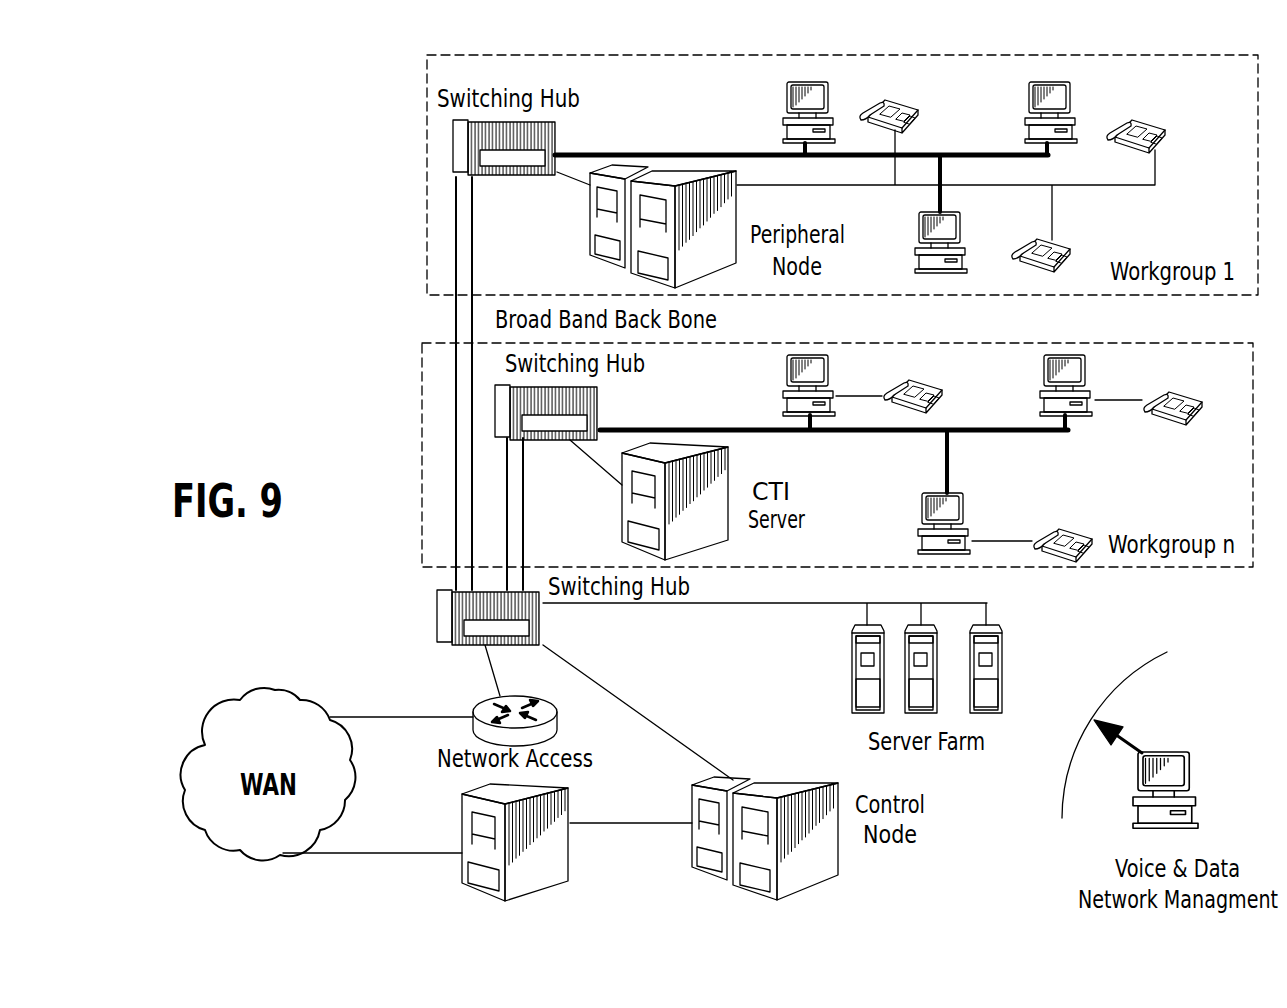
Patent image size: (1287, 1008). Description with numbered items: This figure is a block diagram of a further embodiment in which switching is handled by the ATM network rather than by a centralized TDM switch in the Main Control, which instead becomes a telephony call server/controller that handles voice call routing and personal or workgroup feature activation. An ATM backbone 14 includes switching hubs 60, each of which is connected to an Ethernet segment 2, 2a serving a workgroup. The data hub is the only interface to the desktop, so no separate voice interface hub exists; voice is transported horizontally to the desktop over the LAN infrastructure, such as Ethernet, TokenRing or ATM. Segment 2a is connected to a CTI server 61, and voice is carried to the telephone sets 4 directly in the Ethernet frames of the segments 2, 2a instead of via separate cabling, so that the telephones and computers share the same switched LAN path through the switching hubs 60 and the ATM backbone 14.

The switching hub 60 is at (458, 146).
The Ethernet segment 2 is at (603, 153).
The telephone set 4 is at (918, 112).
The ATM backbone 14 is at (458, 311).
The Ethernet segment 2a is at (670, 428).
The CTI server 61 is at (703, 528).